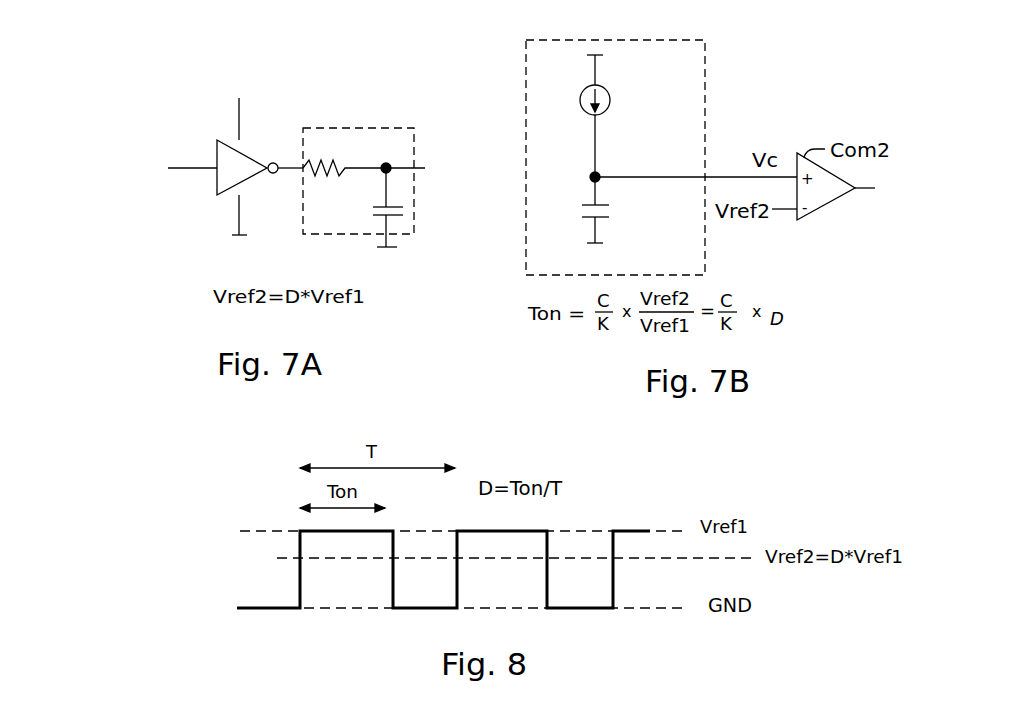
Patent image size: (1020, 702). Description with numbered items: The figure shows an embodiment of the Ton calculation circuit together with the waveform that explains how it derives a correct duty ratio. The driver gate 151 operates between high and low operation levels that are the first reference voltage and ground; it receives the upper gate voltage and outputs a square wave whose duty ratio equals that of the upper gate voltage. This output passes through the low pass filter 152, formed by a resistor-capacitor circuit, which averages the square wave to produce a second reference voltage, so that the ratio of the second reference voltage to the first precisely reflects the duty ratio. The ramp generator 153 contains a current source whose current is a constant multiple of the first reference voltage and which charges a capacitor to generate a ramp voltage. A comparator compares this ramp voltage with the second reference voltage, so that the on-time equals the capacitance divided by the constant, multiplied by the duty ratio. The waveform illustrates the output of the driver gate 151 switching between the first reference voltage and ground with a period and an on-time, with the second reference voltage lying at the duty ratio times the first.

In FIG. 7A, the driver gate 151 is at (227, 193).
In FIG. 8, the driver gate 151 is at (251, 607).
In FIG. 7A, the low pass filter 152 is at (389, 127).
In FIG. 7B, the ramp generator 153 is at (683, 259).